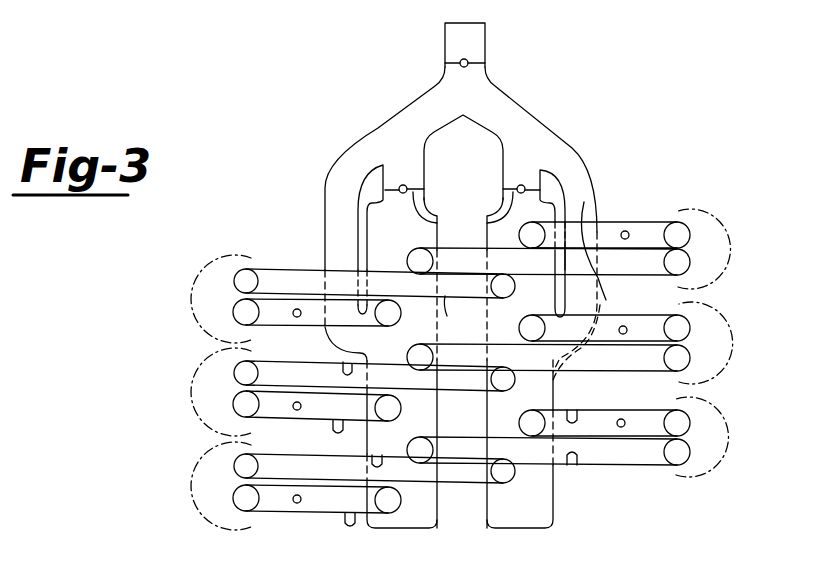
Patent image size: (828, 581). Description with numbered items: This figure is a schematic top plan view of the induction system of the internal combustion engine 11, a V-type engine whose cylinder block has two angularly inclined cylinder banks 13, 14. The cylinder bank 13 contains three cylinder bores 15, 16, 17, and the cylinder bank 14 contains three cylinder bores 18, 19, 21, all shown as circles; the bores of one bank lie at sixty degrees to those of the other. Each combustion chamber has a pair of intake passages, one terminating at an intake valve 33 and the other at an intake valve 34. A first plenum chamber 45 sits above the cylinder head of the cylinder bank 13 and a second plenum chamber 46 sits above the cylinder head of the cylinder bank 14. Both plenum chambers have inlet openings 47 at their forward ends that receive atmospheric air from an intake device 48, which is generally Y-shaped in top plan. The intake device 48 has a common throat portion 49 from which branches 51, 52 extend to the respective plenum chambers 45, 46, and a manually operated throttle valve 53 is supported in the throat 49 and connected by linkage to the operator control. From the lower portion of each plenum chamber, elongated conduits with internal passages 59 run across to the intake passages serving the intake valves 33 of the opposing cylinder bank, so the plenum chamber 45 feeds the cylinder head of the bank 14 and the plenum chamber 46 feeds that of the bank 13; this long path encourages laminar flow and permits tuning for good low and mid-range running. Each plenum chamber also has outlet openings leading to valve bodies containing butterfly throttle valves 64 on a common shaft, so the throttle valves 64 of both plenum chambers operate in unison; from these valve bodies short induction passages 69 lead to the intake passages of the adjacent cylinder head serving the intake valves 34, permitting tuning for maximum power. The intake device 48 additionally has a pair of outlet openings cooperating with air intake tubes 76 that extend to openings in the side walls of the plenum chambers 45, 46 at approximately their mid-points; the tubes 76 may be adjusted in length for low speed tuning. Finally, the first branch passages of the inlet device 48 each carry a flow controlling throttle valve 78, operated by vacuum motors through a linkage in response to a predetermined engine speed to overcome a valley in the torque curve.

The internal combustion engine 11 is at (213, 227).
The cylinder bank 13 is at (198, 523).
The cylinder bank 14 is at (683, 482).
The cylinder bore 15 is at (190, 462).
The cylinder bore 16 is at (190, 379).
The cylinder bore 17 is at (192, 328).
The cylinder bore 18 is at (727, 478).
The cylinder bore 19 is at (728, 350).
The cylinder bore 21 is at (735, 265).
The intake valve 33 is at (247, 278).
The intake valve 34 is at (242, 310).
The first plenum chamber 45 is at (416, 523).
The second plenum chamber 46 is at (545, 512).
The inlet opening 47 is at (517, 176).
The intake device 48 is at (460, 187).
The common throat portion 49 is at (487, 33).
The branch 51 is at (372, 141).
The branch 52 is at (497, 99).
The throttle valve 53 is at (470, 61).
The internal passage 59 is at (345, 364).
The throttle valve 64 is at (297, 317).
The induction passage 69 is at (338, 428).
The air intake tube 76 is at (325, 222).
The throttle valve 78 is at (463, 217).